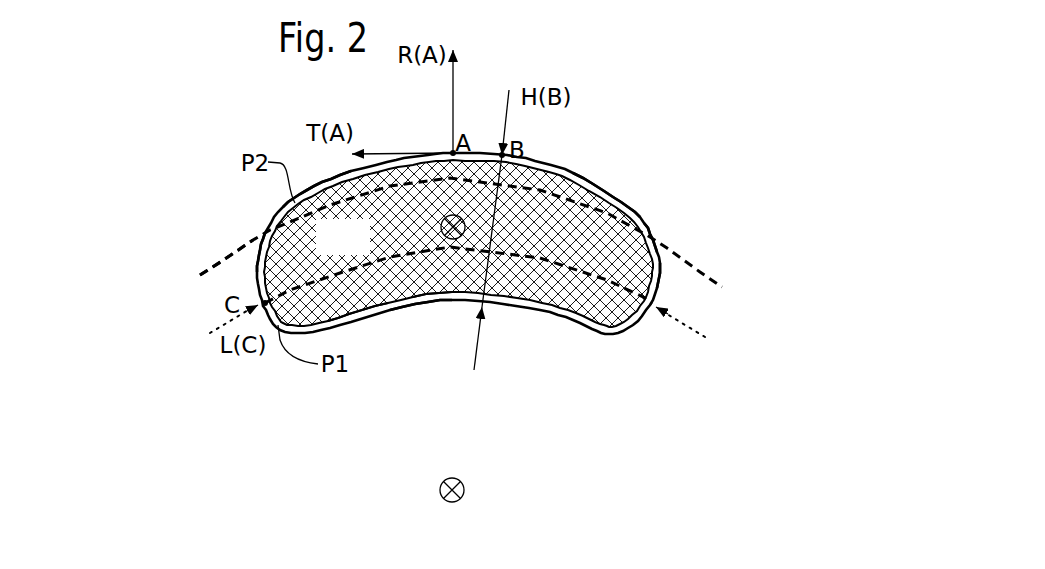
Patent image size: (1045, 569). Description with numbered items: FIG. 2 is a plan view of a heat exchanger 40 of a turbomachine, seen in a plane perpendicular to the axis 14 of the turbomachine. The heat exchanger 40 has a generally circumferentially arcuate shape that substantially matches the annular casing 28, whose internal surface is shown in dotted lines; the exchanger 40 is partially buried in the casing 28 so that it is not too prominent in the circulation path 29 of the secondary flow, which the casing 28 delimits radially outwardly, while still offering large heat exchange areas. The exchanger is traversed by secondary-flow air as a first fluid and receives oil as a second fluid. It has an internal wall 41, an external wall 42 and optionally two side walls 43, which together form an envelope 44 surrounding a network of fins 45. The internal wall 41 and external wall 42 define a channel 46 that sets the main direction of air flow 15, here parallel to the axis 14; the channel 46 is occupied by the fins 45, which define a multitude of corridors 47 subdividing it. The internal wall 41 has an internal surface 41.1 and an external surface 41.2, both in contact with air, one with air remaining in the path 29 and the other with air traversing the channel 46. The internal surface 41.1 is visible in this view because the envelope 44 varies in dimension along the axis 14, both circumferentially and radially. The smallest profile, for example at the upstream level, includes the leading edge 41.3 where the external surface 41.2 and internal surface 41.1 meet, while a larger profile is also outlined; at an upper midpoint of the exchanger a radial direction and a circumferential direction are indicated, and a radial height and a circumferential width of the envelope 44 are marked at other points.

The axis 14 is at (465, 489).
The main direction of air flow 15 is at (464, 220).
The casing 28 is at (222, 262).
The path 29 is at (555, 424).
The heat exchanger 40 is at (732, 122).
The internal wall 41 is at (502, 312).
The internal surface 41.1 is at (467, 301).
The external surface 41.2 is at (409, 282).
The leading edge 41.3 is at (433, 299).
The external wall 42 is at (318, 172).
The side walls 43 is at (665, 276).
The envelope 44 is at (710, 203).
The fins 45 is at (646, 238).
The channel 46 is at (330, 249).
The corridors 47 is at (578, 212).